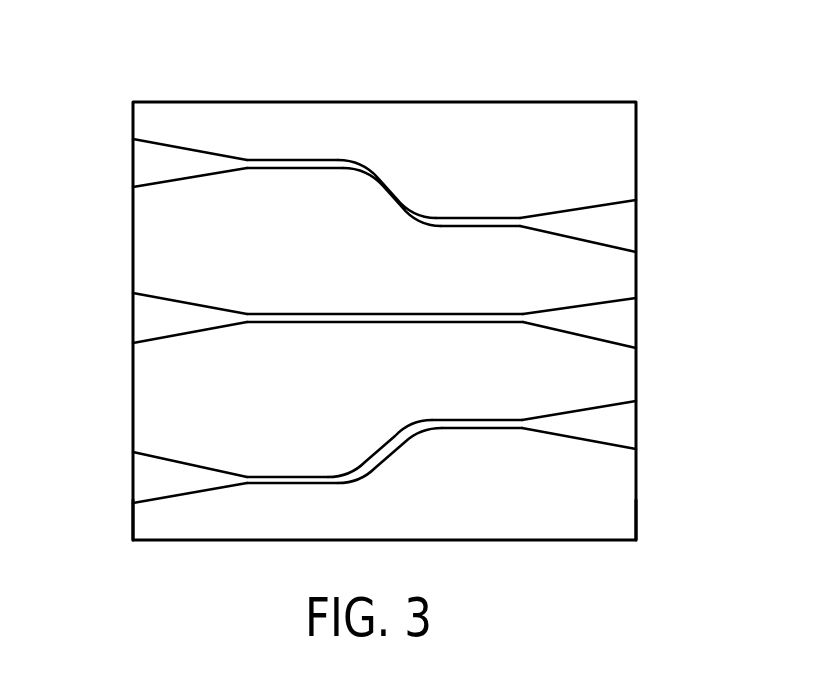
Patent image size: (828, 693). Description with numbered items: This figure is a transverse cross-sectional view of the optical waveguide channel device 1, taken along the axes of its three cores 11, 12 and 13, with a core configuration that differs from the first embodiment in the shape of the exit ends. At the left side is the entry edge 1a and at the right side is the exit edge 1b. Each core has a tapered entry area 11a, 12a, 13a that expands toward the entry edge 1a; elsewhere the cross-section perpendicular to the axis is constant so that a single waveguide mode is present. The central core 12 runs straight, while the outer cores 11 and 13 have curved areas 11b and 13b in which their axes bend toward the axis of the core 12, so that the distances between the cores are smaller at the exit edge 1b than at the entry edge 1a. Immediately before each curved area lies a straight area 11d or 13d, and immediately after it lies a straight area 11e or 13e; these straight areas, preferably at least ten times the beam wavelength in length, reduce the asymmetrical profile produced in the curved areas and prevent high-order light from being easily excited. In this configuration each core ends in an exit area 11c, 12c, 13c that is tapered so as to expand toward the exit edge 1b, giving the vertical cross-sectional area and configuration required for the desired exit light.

The optical waveguide channel device 1 is at (382, 102).
The entry edge 1a is at (131, 526).
The exit edge 1b is at (636, 523).
The core 11 is at (384, 200).
The tapered entry area 11a is at (165, 144).
The curved area 11b is at (431, 214).
The exit area 11c is at (587, 209).
The straight area 11d is at (341, 158).
The straight area 11e is at (522, 213).
The core 12 is at (384, 299).
The tapered entry area 12a is at (165, 302).
The exit area 12c is at (570, 308).
The core 13 is at (384, 443).
The tapered entry area 13a is at (165, 457).
The curved area 13b is at (423, 435).
The exit area 13c is at (584, 440).
The straight area 13d is at (321, 489).
The straight area 13e is at (512, 434).